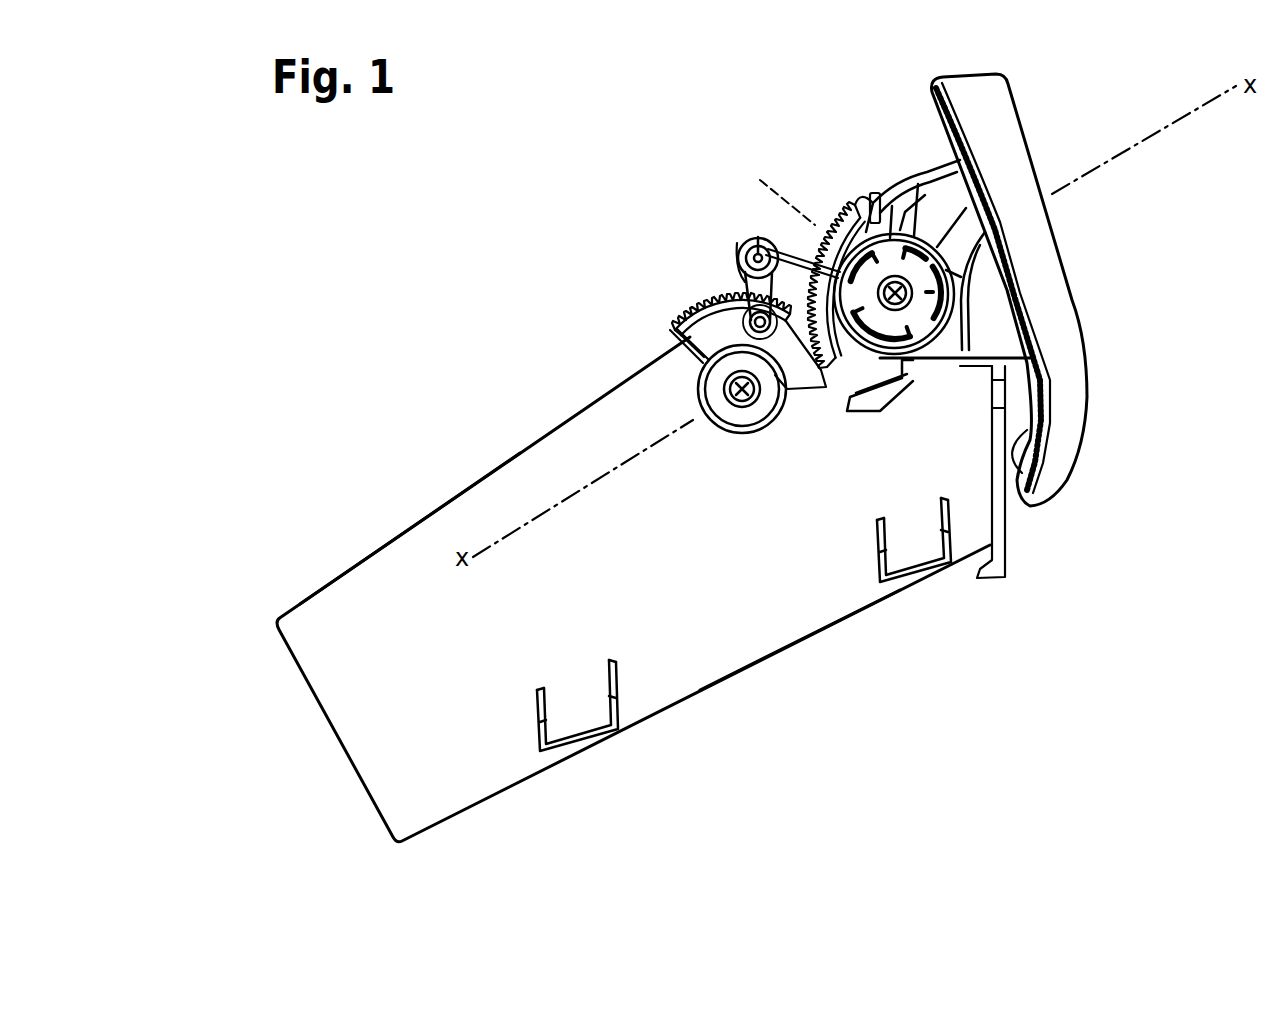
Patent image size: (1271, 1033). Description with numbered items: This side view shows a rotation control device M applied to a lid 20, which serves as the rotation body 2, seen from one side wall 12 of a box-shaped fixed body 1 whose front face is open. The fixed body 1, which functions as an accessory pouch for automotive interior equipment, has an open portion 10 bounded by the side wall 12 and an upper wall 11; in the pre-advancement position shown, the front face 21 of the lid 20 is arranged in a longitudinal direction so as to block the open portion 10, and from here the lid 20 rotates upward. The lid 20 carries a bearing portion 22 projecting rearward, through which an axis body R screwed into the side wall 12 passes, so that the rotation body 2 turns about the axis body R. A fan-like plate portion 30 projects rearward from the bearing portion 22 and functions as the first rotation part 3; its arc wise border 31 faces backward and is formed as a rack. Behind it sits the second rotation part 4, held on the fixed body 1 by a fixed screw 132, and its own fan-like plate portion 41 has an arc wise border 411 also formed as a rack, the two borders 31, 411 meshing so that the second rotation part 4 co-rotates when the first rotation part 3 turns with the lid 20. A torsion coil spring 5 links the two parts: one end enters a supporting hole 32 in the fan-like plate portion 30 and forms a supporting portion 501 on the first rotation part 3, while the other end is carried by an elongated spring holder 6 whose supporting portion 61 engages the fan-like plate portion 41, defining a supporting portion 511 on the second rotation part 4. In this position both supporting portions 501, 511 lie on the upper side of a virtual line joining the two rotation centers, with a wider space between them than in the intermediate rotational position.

The fixed body 1 is at (655, 690).
The upper wall 11 is at (477, 483).
The side wall 12 is at (827, 577).
The fixed screw 132 is at (725, 397).
The second rotation part 4 is at (758, 412).
The fan-like plate portion 41 is at (690, 302).
The arc wise border 411 is at (700, 303).
The supporting portion 511 is at (680, 337).
The supporting portion 61 is at (745, 320).
The spring holder 6 is at (735, 262).
The torsion coil spring 5 is at (740, 247).
The supporting hole 32 is at (795, 245).
The arc wise border 31 is at (776, 186).
The fan-like plate portion 30 is at (825, 241).
The first rotation part 3 is at (883, 275).
The supporting portion 501 is at (866, 195).
The axis body R is at (905, 312).
The rotation control device M is at (837, 133).
The bearing portion 22 is at (928, 183).
The front face 21 is at (1050, 235).
The rotation body 2 is at (1068, 290).
The lid 20 is at (1040, 290).
The open portion 10 is at (973, 437).